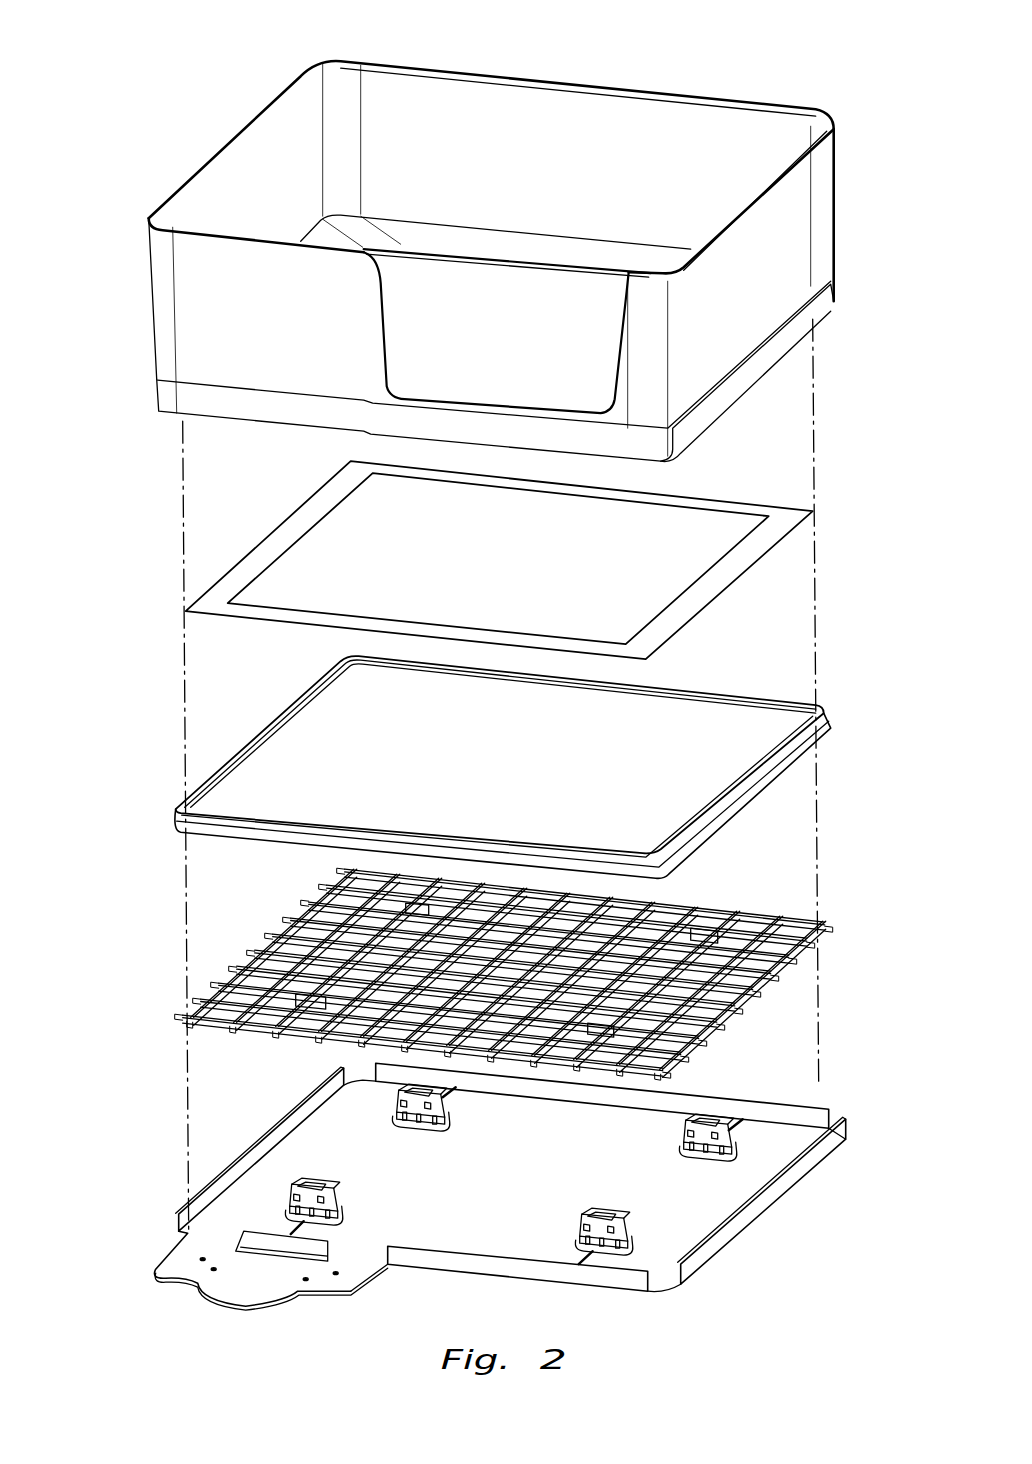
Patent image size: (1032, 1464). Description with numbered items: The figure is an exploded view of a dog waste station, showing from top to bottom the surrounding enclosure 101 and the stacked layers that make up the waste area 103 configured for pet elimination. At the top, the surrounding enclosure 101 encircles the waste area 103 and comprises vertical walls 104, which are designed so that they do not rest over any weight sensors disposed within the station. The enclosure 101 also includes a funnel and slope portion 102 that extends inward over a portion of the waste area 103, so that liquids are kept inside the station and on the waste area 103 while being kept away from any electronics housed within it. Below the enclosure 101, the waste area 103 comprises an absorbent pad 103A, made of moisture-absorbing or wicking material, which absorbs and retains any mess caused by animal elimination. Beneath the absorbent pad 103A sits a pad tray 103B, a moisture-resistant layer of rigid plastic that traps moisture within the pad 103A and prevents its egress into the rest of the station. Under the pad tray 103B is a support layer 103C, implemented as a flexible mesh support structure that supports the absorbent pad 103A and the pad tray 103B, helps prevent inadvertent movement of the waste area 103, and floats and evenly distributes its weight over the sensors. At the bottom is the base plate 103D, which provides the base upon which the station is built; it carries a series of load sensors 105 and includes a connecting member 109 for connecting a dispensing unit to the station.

The surrounding enclosure 101 is at (491, 235).
The funnel and slope portion 102 is at (527, 245).
The waste area 103 is at (108, 656).
The absorbent pad 103A is at (795, 512).
The pad tray 103B is at (823, 705).
The support layer 103C is at (830, 915).
The base plate 103D is at (507, 1207).
The vertical walls 104 is at (650, 137).
The load sensors 105 is at (293, 1197).
The connecting member 109 is at (222, 1305).